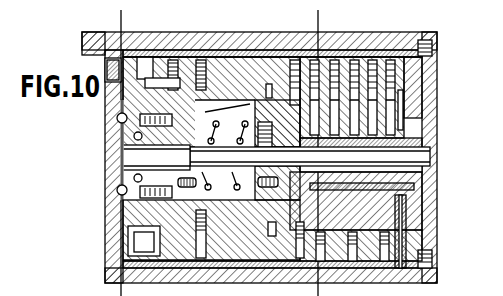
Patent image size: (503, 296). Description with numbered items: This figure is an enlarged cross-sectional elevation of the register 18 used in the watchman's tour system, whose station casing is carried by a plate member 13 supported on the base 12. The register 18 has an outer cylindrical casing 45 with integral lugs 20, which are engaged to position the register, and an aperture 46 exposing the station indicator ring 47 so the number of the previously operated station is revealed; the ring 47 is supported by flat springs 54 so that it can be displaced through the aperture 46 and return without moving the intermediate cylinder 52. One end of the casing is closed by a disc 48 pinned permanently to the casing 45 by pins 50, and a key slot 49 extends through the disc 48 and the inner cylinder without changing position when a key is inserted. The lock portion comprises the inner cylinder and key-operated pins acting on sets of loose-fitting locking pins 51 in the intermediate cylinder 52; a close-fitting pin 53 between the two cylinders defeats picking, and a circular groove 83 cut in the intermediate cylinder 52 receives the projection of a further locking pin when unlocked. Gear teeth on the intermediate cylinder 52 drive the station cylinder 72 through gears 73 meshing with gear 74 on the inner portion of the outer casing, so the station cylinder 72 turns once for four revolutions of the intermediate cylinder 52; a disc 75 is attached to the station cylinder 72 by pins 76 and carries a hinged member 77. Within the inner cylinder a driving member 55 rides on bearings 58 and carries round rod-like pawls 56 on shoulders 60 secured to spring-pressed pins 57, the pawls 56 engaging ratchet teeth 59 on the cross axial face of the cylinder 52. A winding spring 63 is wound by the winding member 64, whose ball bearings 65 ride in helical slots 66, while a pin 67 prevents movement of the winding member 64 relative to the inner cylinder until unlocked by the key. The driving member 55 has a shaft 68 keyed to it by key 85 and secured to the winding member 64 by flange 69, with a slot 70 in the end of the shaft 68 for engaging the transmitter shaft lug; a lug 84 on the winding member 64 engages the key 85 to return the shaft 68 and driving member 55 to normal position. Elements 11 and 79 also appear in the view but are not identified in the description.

The section line 11- 11 is at (116, 22).
The base 12 is at (264, 90).
The plate member 13 is at (313, 22).
The register 18 is at (445, 62).
The lugs 20 is at (82, 41).
The outer cylindrical casing 45 is at (204, 50).
The aperture 46 is at (107, 67).
The station indicator ring 47 is at (122, 258).
The disc 48 is at (436, 105).
The key slot 49 is at (440, 163).
The pins 50 is at (434, 45).
The locking pins 51 is at (352, 97).
The intermediate cylinder 52 is at (255, 66).
The pin 53 is at (206, 78).
The flat springs 54 is at (136, 243).
The driving member 55 is at (156, 157).
The pawls 56 is at (146, 128).
The spring-pressed pins 57 is at (172, 138).
The bearings 58 is at (134, 177).
The ratchet teeth 59 is at (134, 137).
The shoulders 60 is at (118, 116).
The winding spring 63 is at (221, 186).
The winding member 64 is at (269, 237).
The ball bearings 65 is at (301, 240).
The helical slots 66 is at (212, 234).
The pin 67 is at (302, 82).
The shaft 68 is at (310, 158).
The flange 69 is at (279, 183).
The slot 70 is at (440, 161).
The station cylinder 72 is at (352, 50).
The gears 73 is at (375, 268).
The gear 74 is at (156, 50).
The disc 75 is at (410, 233).
The pins 76 is at (415, 78).
The hinged member 77 is at (404, 100).
The guide strip 79 is at (432, 121).
The circular groove 83 is at (277, 81).
The lug 84 is at (277, 123).
The key 85 is at (217, 138).